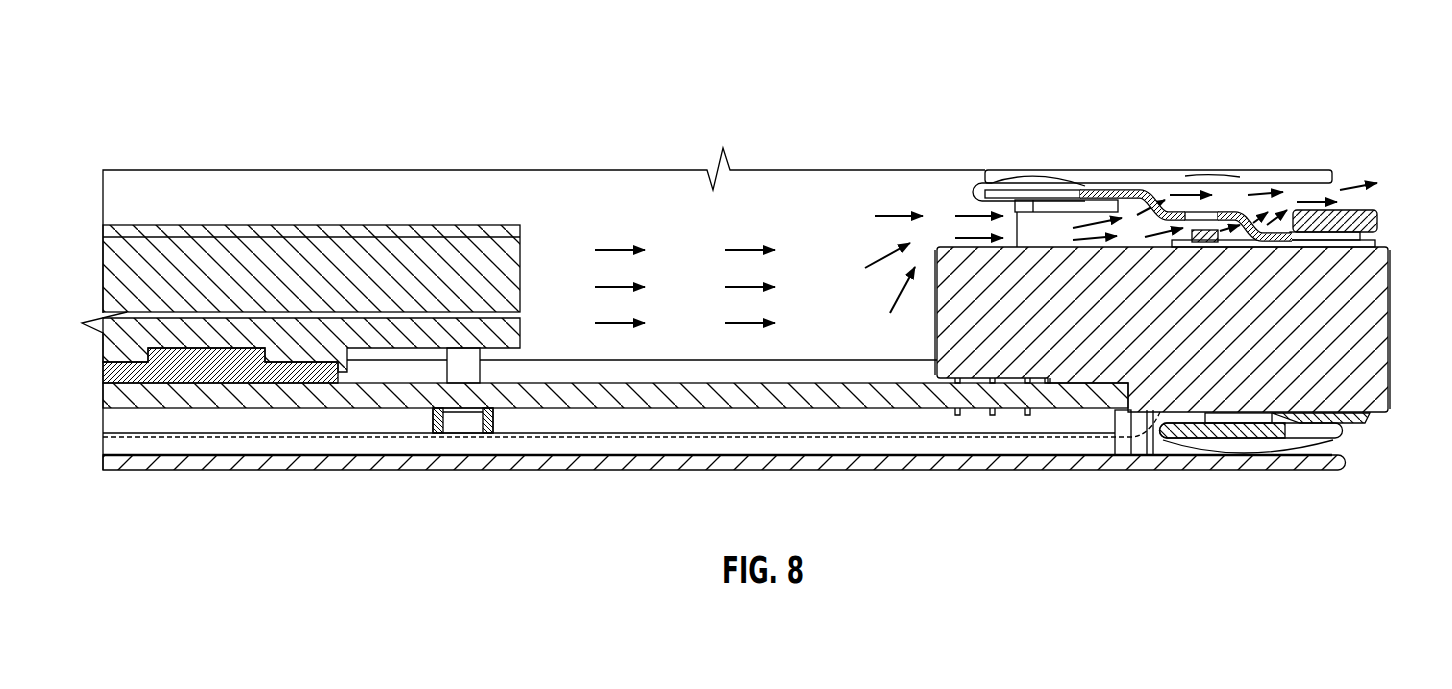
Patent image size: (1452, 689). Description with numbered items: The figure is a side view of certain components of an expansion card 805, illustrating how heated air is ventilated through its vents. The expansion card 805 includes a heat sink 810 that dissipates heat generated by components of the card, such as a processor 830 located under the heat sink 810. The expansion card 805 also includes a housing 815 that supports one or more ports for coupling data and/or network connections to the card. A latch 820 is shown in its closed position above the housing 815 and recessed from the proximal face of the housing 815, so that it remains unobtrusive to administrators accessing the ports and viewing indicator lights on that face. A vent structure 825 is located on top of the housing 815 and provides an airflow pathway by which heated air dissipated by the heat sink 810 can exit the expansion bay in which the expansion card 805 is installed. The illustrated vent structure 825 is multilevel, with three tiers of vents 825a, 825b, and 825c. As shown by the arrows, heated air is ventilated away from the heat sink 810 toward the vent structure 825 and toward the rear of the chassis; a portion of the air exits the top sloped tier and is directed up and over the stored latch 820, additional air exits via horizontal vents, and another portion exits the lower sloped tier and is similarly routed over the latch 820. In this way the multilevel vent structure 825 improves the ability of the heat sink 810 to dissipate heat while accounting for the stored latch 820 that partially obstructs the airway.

The expansion card 805 is at (203, 43).
The heat sink 810 is at (262, 250).
The housing 815 is at (1353, 343).
The latch 820 is at (1338, 218).
The vent structure 825 is at (1102, 190).
The tier of vents 825a is at (1145, 195).
The tier of vents 825b is at (1190, 210).
The tier of vents 825c is at (1247, 215).
The processor 830 is at (212, 372).